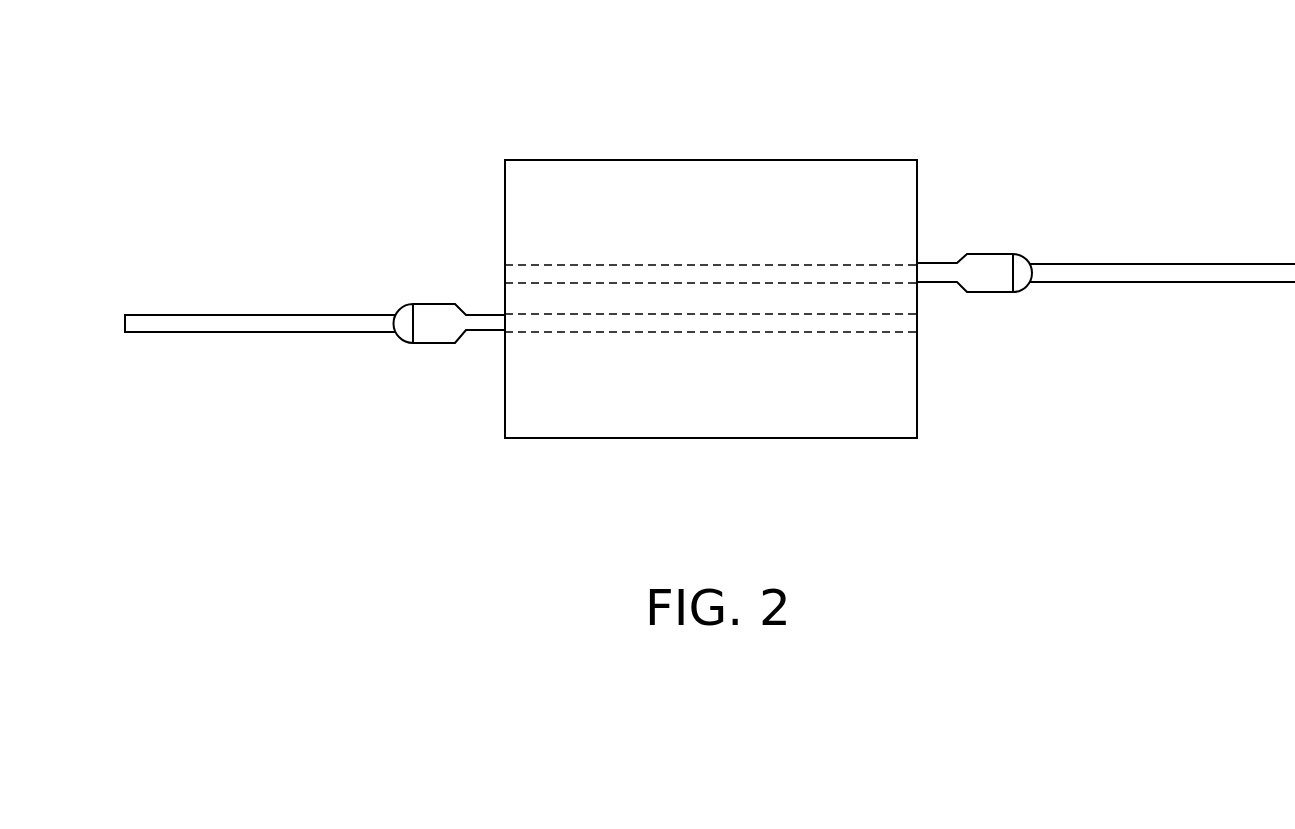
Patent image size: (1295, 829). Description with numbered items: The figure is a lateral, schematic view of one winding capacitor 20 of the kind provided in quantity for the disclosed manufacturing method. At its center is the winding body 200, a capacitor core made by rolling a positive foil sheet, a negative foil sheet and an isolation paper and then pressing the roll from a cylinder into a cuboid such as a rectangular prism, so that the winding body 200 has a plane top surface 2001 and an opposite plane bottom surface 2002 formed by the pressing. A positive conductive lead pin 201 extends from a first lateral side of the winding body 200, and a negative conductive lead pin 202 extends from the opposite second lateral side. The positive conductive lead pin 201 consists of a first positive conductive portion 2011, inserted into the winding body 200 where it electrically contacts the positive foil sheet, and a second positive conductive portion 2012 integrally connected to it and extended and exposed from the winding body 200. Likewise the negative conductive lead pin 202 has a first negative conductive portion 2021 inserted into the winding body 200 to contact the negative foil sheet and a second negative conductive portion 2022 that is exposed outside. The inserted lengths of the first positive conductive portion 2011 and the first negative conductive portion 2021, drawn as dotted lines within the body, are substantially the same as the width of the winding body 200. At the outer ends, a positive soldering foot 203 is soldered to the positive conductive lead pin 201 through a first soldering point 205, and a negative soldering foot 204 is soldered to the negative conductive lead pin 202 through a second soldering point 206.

The winding capacitor 20 is at (927, 54).
The winding body 200 is at (665, 175).
The plane top surface 2001 is at (767, 159).
The plane bottom surface 2002 is at (763, 440).
The positive conductive lead pin 201 is at (453, 374).
The first positive conductive portion 2011 is at (530, 323).
The second positive conductive portion 2012 is at (433, 330).
The negative conductive lead pin 202 is at (963, 217).
The first negative conductive portion 2021 is at (876, 272).
The second negative conductive portion 2022 is at (992, 270).
The positive soldering foot 203 is at (235, 330).
The negative soldering foot 204 is at (1160, 270).
The first soldering point 205 is at (407, 315).
The second soldering point 206 is at (1022, 283).